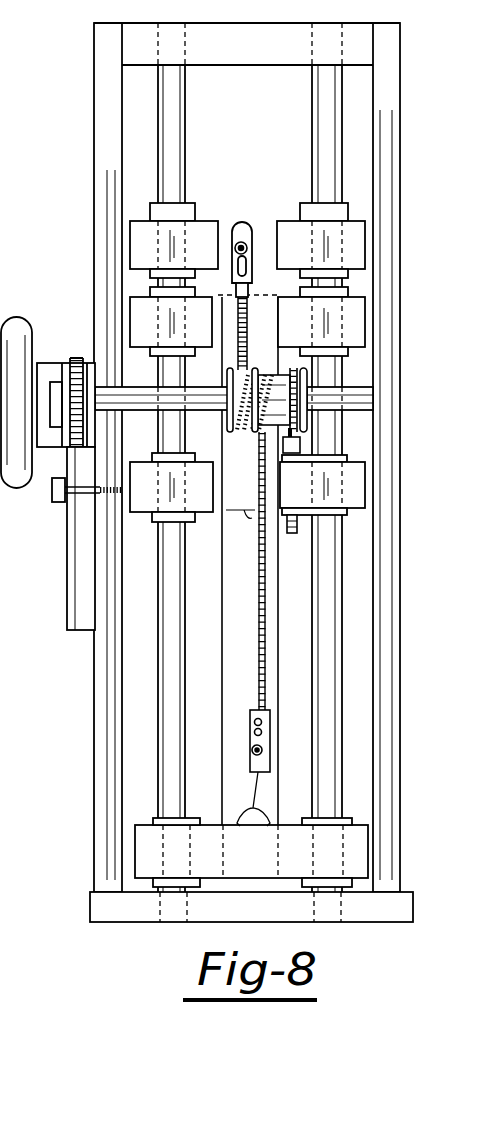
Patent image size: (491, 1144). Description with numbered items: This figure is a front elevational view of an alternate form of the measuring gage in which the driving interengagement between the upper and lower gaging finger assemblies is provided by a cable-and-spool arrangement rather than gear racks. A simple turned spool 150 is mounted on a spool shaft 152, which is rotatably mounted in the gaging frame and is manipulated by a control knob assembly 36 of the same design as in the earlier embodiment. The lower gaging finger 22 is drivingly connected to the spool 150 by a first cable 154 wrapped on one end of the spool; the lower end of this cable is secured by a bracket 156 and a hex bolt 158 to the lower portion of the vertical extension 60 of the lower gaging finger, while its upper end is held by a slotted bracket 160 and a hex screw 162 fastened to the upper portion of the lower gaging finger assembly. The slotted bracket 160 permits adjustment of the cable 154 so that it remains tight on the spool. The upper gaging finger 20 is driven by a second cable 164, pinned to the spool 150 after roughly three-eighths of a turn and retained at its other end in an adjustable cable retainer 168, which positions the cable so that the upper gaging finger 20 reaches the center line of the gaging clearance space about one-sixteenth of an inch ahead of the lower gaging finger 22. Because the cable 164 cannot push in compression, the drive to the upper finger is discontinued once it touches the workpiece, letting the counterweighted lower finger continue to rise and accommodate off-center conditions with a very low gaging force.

The upper gaging finger 20 is at (133, 296).
The lower gaging finger 22 is at (219, 647).
The control knob assembly 36 is at (13, 314).
The vertical extension 60 is at (225, 595).
The spool 150 is at (230, 434).
The spool shaft 152 is at (360, 388).
The first cable 154 is at (246, 324).
The bracket 156 is at (249, 723).
The hex bolt 158 is at (252, 752).
The slotted bracket 160 is at (240, 240).
The hex screw 162 is at (234, 223).
The second cable 164 is at (295, 368).
The adjustable cable retainer 168 is at (303, 445).